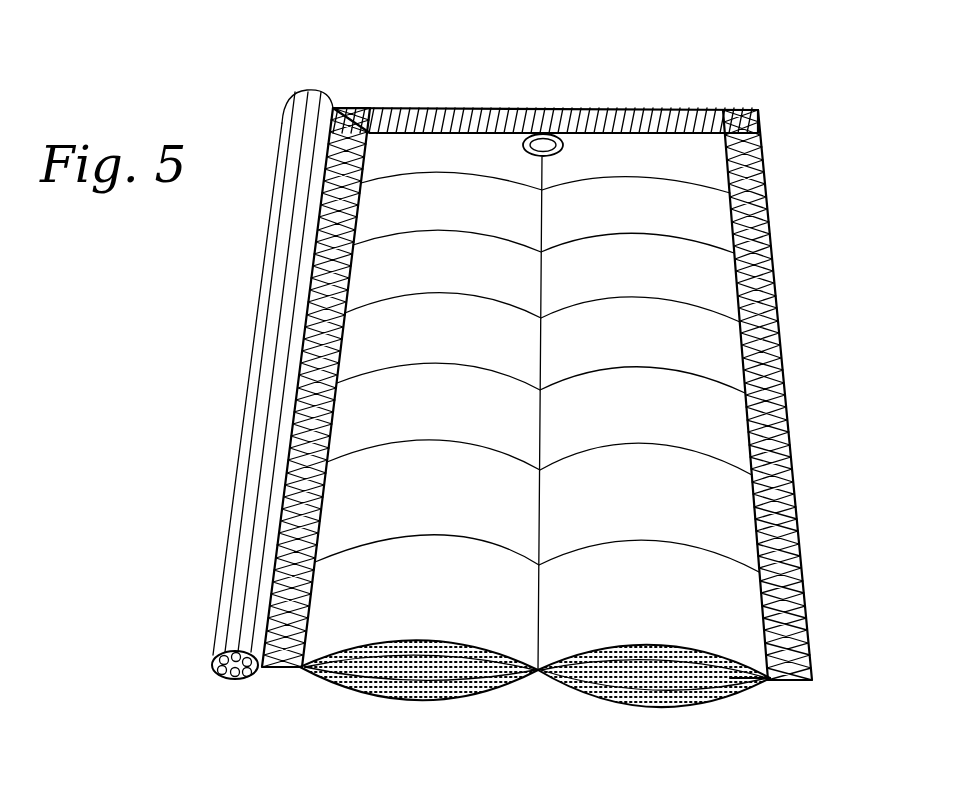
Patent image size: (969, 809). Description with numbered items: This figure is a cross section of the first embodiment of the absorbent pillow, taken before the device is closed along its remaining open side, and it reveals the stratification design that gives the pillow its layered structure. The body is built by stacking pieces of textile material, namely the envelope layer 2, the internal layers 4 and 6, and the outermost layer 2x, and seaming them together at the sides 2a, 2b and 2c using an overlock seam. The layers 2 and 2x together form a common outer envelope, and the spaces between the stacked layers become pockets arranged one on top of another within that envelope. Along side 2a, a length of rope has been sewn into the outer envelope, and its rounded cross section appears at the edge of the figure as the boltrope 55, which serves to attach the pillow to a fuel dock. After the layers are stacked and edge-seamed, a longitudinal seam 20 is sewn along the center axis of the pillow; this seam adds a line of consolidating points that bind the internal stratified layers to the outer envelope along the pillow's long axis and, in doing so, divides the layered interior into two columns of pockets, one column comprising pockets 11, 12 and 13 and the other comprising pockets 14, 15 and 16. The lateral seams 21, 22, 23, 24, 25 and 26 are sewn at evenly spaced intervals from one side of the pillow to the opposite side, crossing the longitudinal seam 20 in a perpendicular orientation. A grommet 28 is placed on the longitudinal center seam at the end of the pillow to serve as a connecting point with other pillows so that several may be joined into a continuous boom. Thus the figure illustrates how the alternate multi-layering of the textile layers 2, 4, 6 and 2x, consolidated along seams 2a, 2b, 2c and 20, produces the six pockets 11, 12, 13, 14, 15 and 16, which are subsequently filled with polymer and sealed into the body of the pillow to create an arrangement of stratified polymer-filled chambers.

The envelope 2 is at (757, 645).
The side seam 2a is at (308, 307).
The side seam 2b is at (493, 108).
The side seam 2c is at (770, 233).
The textile material layer 2x is at (567, 693).
The textile material layer 4 is at (750, 690).
The textile material layer 6 is at (727, 702).
The pocket 11 is at (347, 690).
The pocket 12 is at (387, 688).
The pocket 13 is at (427, 702).
The pocket 14 is at (693, 687).
The pocket 15 is at (653, 690).
The pocket 16 is at (608, 700).
The longitudinal seam 20 is at (530, 685).
The lateral seam 21 is at (407, 173).
The lateral seam 22 is at (405, 232).
The lateral seam 23 is at (395, 296).
The lateral seam 24 is at (385, 365).
The lateral seam 25 is at (380, 445).
The lateral seam 26 is at (370, 542).
The grommet 28 is at (563, 148).
The boltrope 55 is at (263, 435).